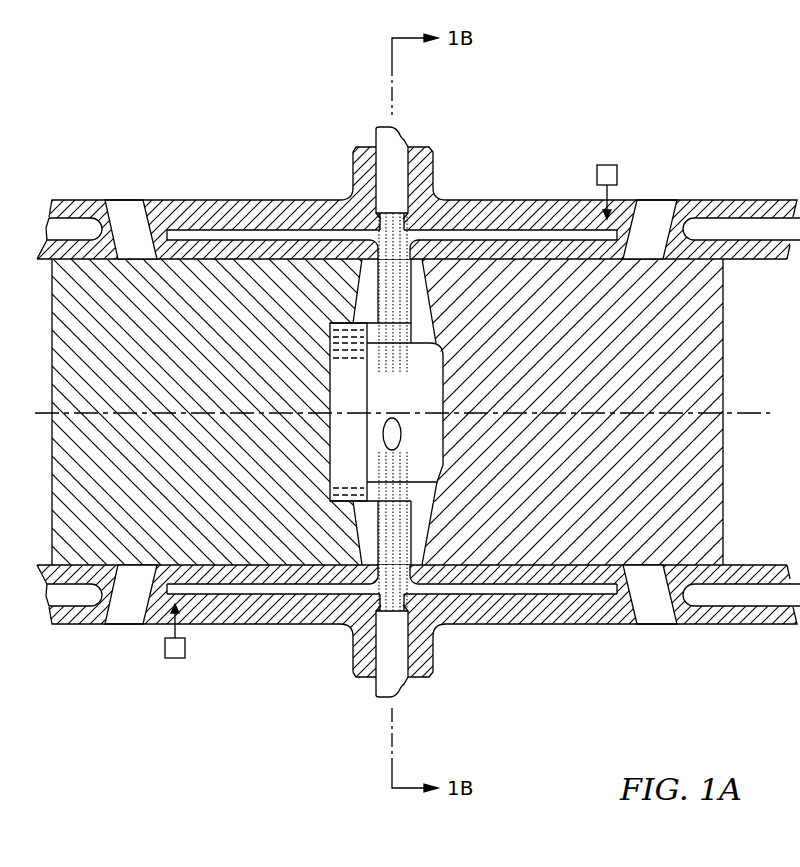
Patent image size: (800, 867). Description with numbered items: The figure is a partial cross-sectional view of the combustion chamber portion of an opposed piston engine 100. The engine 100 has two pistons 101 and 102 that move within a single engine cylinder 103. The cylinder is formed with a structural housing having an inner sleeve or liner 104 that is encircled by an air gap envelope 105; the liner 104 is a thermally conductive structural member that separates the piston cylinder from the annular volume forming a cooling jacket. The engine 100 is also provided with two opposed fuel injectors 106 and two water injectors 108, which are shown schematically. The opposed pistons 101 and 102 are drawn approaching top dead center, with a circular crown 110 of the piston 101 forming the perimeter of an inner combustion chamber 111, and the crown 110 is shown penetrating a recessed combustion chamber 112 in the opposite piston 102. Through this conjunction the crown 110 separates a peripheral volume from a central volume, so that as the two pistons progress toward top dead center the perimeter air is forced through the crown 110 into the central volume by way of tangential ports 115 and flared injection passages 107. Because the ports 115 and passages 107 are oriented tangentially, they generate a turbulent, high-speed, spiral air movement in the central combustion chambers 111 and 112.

The opposed piston engine 100 is at (245, 615).
The piston 101 is at (533, 553).
The piston 102 is at (322, 555).
The engine cylinder 103 is at (623, 612).
The inner sleeve or liner 104 is at (547, 243).
The air gap envelope 105 is at (268, 238).
The fuel injector 106 is at (400, 133).
The flared injection passage 107 is at (447, 263).
The water injector 108 is at (617, 170).
The circular crown 110 is at (428, 458).
The inner combustion chamber 111 is at (427, 388).
The recessed combustion chamber 112 is at (330, 442).
The tangential port 115 is at (401, 437).